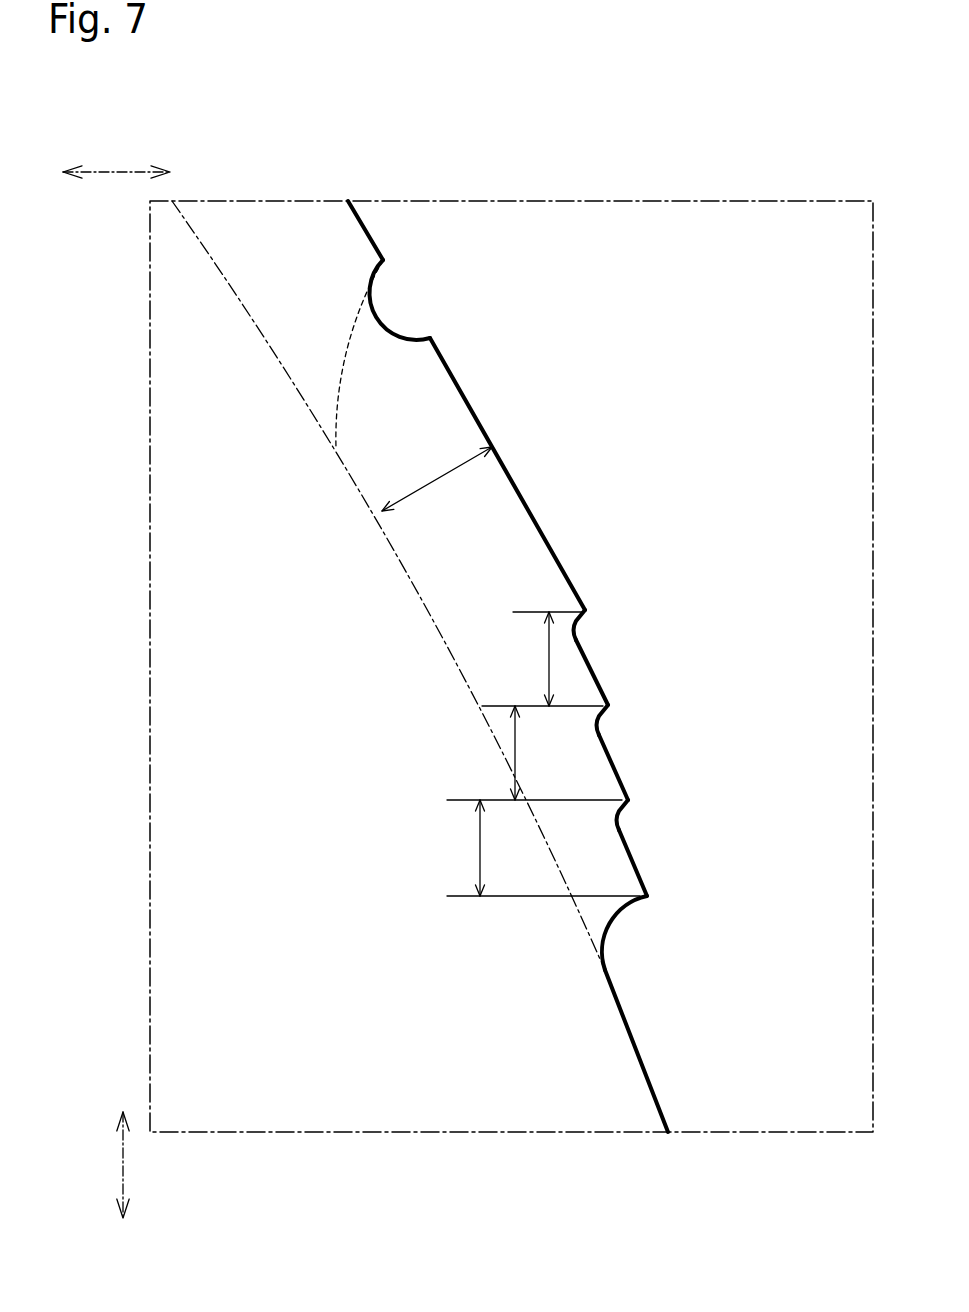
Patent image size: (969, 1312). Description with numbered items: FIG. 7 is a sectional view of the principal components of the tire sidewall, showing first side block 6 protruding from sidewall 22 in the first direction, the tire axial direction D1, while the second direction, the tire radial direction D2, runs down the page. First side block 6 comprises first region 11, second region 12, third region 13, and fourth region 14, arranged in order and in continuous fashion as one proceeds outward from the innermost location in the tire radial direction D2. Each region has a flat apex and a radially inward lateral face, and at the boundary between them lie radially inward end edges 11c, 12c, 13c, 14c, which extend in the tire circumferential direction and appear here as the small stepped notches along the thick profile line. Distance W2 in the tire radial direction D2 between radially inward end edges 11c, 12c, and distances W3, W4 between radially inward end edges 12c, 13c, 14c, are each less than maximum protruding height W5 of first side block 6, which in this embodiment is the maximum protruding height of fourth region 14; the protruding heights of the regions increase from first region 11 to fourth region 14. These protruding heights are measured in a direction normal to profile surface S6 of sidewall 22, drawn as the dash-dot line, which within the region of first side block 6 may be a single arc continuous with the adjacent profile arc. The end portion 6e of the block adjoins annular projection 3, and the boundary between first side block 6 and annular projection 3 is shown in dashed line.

The annular projection 3 is at (365, 236).
The first side block 6 is at (617, 477).
The end portion of tooth 6e is at (397, 302).
The fourth region 14 is at (470, 397).
The radially inward end edge 14c is at (590, 612).
The third region 13 is at (595, 670).
The radially inward end edge 13c is at (612, 708).
The second region 12 is at (613, 763).
The radially inward end edge 12c is at (630, 803).
The first region 11 is at (633, 857).
The radially inward end edge 11c is at (648, 900).
The sidewall 22 is at (728, 1070).
The profile surface S6 is at (408, 567).
The maximum protruding height W5 is at (437, 479).
The distance W4 is at (542, 659).
The distance W3 is at (534, 753).
The distance W2 is at (543, 848).
The tire axial direction D1 is at (116, 163).
The tire radial direction D2 is at (108, 1165).